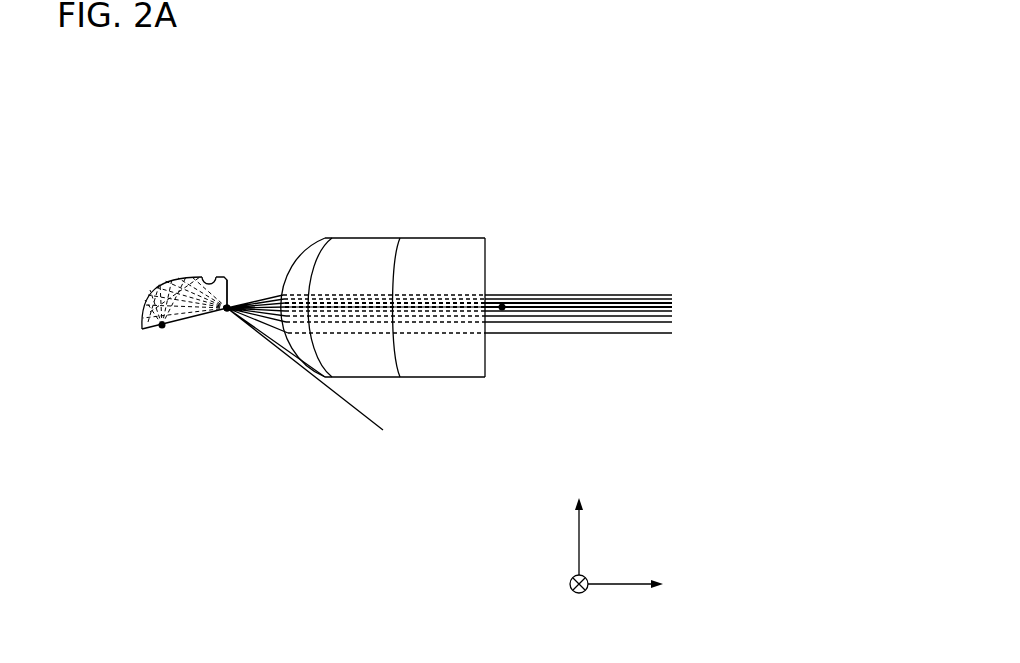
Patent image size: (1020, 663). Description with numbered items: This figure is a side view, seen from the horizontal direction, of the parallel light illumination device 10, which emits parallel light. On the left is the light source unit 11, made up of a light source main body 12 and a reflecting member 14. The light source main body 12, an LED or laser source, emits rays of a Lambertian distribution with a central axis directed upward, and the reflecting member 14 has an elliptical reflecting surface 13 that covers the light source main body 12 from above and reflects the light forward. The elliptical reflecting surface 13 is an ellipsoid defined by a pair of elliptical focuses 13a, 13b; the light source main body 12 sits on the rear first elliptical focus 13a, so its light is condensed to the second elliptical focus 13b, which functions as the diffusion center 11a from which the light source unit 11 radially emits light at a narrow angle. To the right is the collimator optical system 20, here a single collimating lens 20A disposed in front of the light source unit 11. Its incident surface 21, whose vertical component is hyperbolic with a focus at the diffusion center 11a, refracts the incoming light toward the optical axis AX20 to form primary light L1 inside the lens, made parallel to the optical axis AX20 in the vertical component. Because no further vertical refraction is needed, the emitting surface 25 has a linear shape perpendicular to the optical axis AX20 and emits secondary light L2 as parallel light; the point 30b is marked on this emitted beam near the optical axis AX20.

The parallel light illumination device 10 is at (614, 143).
The light source unit 11 is at (176, 270).
The diffusion center 11a is at (228, 312).
The light source main body 12 is at (162, 328).
The elliptical reflecting surface 13 is at (208, 281).
The first elliptical focus 13a is at (166, 329).
The second elliptical focus 13b is at (238, 437).
The reflecting member 14 is at (154, 293).
The collimator optical system 20 is at (438, 228).
The collimating lens 20A is at (415, 238).
The incident surface 21 is at (302, 357).
The emitting surface 25 is at (486, 362).
The focal point / beam waist 30b is at (502, 303).
The primary light L1 is at (458, 293).
The secondary light L2 is at (580, 295).
The optical axis AX20 is at (553, 312).